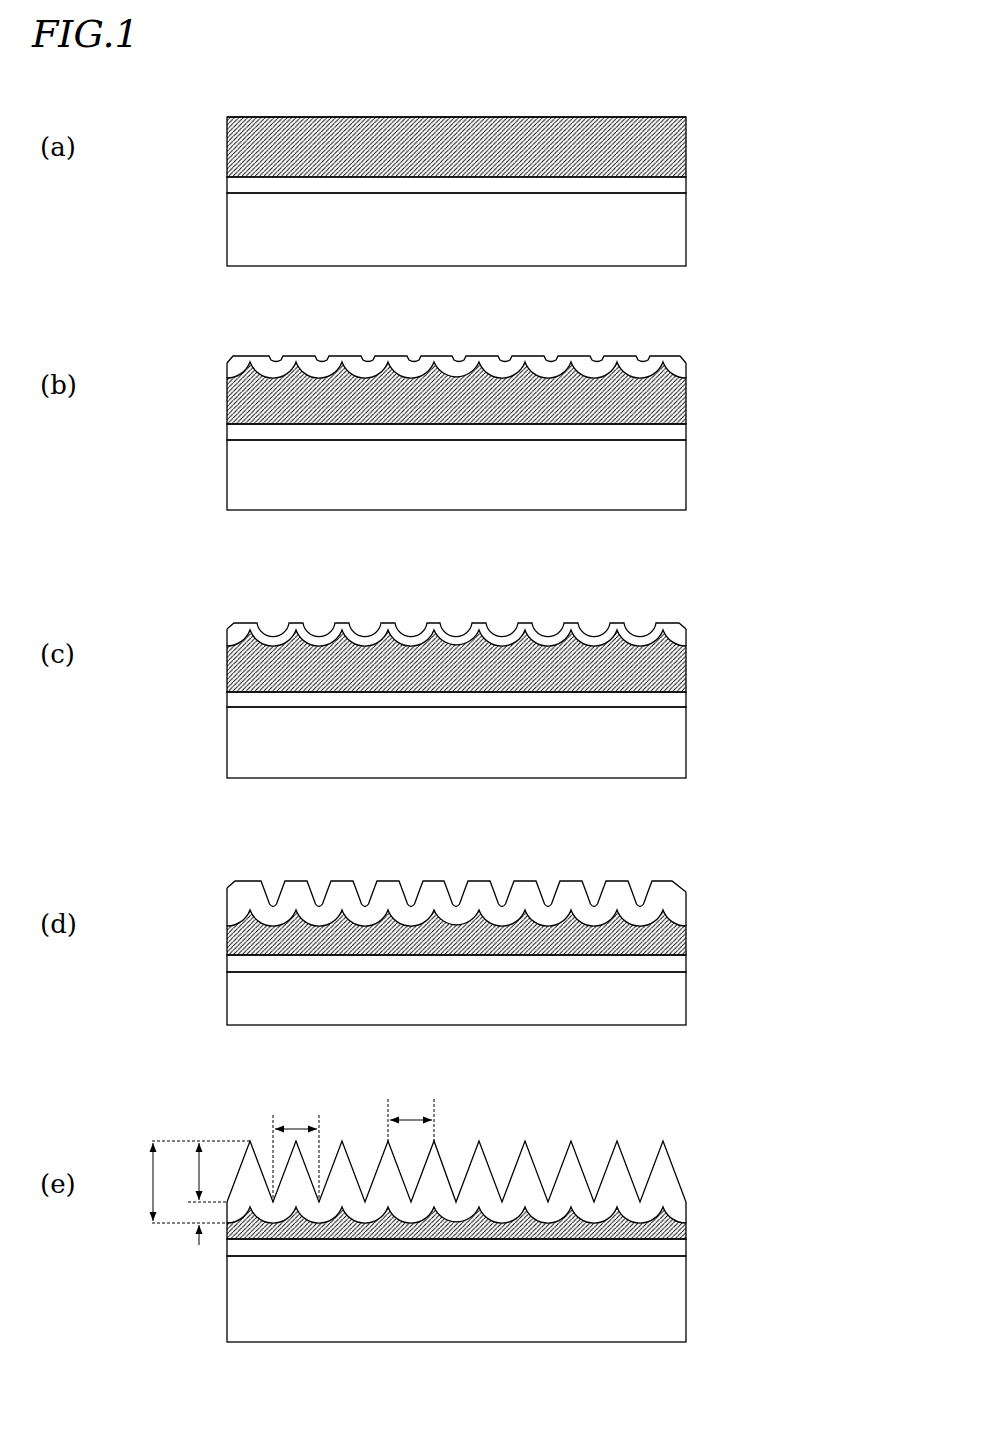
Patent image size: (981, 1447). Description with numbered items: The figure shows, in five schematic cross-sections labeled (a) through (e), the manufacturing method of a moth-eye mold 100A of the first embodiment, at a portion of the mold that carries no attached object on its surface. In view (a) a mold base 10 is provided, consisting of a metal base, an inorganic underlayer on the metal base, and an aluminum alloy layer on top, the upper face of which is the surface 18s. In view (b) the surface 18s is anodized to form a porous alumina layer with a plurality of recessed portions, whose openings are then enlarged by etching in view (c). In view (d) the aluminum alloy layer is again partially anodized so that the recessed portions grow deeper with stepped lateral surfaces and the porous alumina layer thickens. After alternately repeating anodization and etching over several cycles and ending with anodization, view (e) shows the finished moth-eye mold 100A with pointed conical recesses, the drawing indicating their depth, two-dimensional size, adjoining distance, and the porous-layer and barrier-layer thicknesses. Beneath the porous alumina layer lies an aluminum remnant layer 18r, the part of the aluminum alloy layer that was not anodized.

The mold base 10 is at (519, 153).
The surface of the aluminum alloy layer 18s is at (487, 117).
The aluminum remnant layer 18r is at (684, 1226).
The moth-eye mold 100A is at (477, 1202).